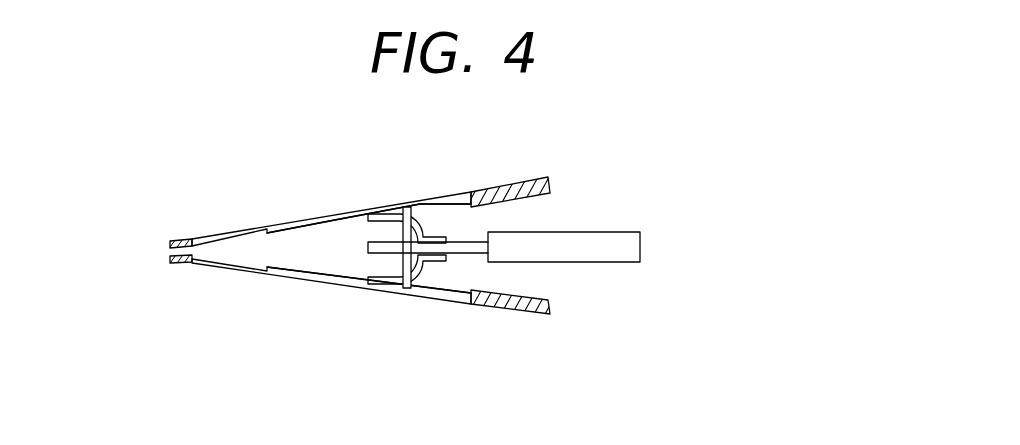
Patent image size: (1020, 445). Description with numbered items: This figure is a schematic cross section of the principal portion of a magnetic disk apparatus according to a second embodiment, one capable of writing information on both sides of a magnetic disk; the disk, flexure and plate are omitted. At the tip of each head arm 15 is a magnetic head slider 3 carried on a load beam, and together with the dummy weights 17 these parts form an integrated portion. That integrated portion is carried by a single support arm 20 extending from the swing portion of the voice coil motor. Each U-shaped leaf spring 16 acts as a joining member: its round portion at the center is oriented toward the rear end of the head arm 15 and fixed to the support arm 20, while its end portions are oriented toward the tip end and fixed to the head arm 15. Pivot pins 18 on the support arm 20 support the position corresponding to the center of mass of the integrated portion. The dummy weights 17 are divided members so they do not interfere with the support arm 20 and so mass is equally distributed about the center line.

The magnetic head slider 3 is at (170, 240).
The head arm 15 is at (293, 220).
The leaf spring 16 is at (378, 221).
The dummy weights 17 is at (515, 178).
The pivot pins 18 is at (419, 207).
The support arm 20 is at (620, 248).